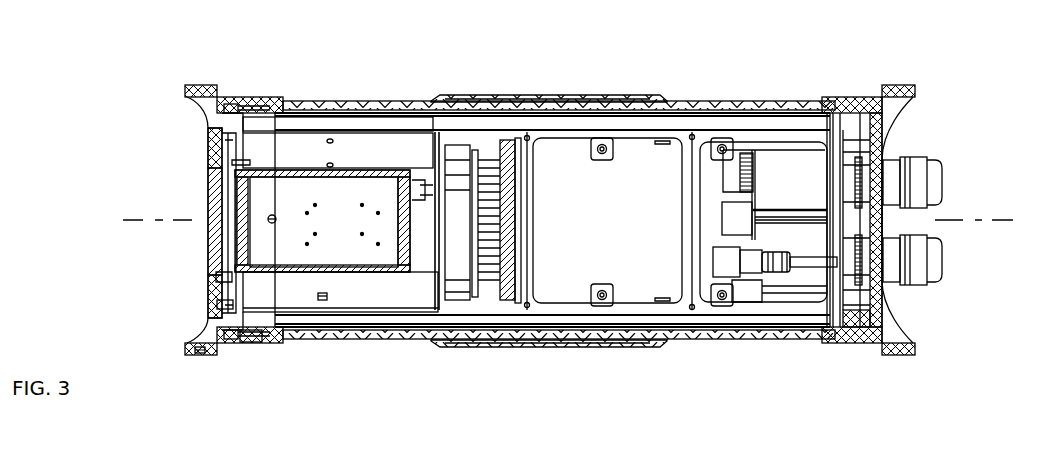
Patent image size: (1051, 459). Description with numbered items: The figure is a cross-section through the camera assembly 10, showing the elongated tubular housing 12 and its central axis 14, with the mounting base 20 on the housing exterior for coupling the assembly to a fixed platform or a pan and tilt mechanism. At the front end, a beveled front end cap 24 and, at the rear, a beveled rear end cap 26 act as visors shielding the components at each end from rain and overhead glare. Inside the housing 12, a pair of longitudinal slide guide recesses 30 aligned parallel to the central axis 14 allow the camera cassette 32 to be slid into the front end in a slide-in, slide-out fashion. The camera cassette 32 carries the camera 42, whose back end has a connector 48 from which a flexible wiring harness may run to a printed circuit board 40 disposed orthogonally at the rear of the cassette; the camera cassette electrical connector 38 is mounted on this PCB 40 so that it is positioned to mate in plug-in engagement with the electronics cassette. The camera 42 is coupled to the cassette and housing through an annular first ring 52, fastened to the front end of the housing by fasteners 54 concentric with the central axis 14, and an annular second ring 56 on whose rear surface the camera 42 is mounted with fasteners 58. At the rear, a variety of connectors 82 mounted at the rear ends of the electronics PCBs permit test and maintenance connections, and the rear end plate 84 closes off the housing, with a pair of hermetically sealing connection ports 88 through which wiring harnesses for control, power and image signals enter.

The camera assembly 10 is at (397, 82).
The elongated tubular housing 12 is at (740, 101).
The central axis 14 is at (135, 220).
The mounting base 20 is at (635, 95).
The front end cap 24 is at (208, 110).
The rear end cap 26 is at (892, 110).
The longitudinal slide guide recesses 30 is at (335, 118).
The camera cassette 32 is at (355, 297).
The camera cassette electrical connector 38 is at (500, 292).
The printed circuit board 40 is at (463, 245).
The camera 42 is at (346, 231).
The connector 48 is at (415, 195).
The first ring 52 is at (217, 303).
The fasteners 54 is at (243, 347).
The second ring 56 is at (208, 282).
The fasteners 58 is at (247, 160).
The connectors 82 is at (738, 177).
The rear end plate 84 is at (875, 320).
The hermetically sealing connection ports 88 is at (922, 148).